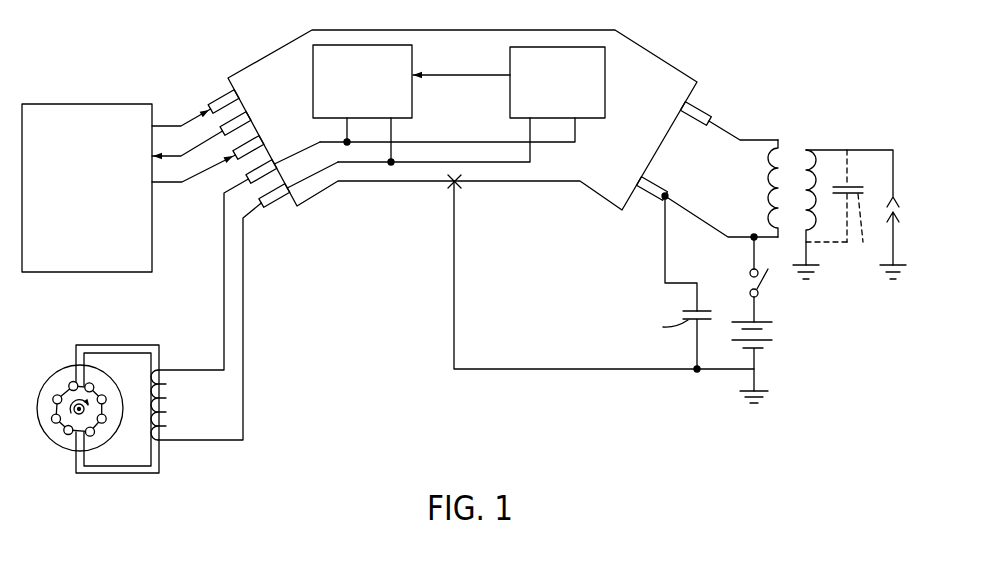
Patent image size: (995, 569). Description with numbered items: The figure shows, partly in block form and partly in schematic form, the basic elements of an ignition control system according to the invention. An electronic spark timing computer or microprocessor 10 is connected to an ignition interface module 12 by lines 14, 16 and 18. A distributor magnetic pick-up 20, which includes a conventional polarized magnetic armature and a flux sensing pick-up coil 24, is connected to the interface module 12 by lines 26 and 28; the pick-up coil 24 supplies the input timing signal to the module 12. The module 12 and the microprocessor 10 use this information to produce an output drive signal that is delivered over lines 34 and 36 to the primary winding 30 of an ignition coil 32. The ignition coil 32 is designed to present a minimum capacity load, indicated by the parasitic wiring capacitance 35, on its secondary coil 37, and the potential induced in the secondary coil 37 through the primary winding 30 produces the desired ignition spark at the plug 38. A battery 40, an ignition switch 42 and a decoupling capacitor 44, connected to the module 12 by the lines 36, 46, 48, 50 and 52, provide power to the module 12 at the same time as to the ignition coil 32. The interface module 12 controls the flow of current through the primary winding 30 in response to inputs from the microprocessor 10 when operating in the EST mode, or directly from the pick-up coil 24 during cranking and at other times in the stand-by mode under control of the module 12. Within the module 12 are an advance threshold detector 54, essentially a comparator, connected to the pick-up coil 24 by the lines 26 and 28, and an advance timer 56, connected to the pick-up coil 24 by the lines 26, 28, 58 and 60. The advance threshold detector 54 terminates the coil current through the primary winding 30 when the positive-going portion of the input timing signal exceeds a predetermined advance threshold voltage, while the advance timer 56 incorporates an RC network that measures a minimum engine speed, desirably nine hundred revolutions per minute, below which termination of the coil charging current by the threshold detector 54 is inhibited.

The microprocessor 10 is at (116, 273).
The interface module 12 is at (487, 185).
The line 14 is at (190, 124).
The line 16 is at (169, 155).
The line 18 is at (169, 183).
The distributor magnetic pick-up 20 is at (79, 479).
The pick-up coil 24 is at (160, 410).
The line 26 is at (224, 312).
The line 28 is at (247, 318).
The primary winding 30 is at (763, 188).
The ignition coil 32 is at (802, 148).
The line 34 is at (720, 129).
The parasitic wiring capacitance 35 is at (840, 232).
The line 36 is at (692, 213).
The secondary coil 37 is at (839, 196).
The plug 38 is at (897, 194).
The battery 40 is at (768, 343).
The ignition switch 42 is at (763, 287).
The decoupling capacitor 44 is at (622, 331).
The line 46 is at (663, 258).
The line 48 is at (455, 277).
The line 50 is at (696, 349).
The line 52 is at (757, 362).
The advance threshold detector 54 is at (352, 45).
The advance timer 56 is at (547, 47).
The line 58 is at (563, 144).
The line 60 is at (514, 163).